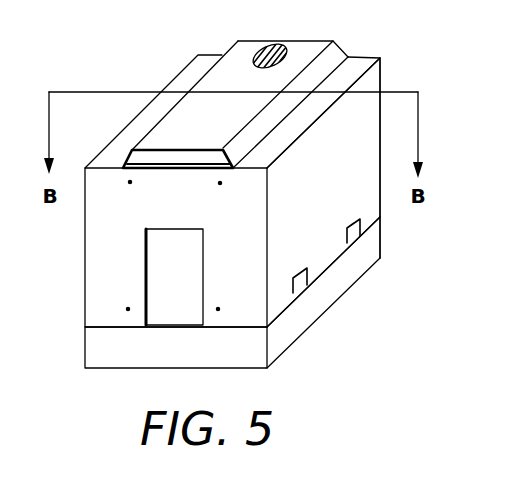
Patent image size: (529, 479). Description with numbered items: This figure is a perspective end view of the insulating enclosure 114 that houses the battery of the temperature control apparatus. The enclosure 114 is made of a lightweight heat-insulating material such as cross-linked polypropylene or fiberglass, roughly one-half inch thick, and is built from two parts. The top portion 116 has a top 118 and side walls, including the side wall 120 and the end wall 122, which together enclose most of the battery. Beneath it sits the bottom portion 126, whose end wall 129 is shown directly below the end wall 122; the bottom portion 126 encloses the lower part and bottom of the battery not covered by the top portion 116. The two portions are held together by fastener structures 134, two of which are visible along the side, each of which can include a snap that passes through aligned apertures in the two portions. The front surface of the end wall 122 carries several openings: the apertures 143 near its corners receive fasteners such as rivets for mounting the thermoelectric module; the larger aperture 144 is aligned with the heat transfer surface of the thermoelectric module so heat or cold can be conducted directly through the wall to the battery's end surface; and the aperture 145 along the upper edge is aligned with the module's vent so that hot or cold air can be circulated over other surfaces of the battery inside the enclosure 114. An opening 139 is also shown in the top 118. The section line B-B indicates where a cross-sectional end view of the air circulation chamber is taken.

The insulating enclosure 114 is at (294, 184).
The top portion 116 is at (269, 129).
The top 118 is at (240, 75).
The side wall 120 is at (335, 203).
The end wall 122 is at (202, 198).
The bottom portion 126 is at (275, 337).
The end wall 129 is at (253, 353).
The fastener structures 134 is at (360, 231).
The opening 139 is at (270, 44).
The apertures 143 is at (130, 182).
The aperture 144 is at (157, 287).
The aperture 145 is at (143, 158).